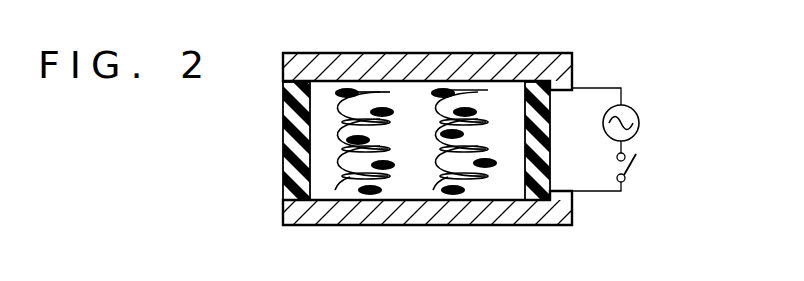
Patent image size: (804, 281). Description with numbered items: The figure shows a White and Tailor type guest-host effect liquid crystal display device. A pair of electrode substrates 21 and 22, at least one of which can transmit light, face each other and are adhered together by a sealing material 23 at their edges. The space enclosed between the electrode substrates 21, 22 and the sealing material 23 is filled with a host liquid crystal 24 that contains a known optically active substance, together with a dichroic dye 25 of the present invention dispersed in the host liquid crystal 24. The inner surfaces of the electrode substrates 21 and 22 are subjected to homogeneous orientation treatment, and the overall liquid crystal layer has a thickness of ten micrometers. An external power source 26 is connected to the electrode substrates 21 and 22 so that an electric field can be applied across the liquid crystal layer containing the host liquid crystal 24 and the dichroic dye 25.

The electrode substrate 21 is at (535, 53).
The electrode substrate 22 is at (502, 217).
The sealing material 23 is at (283, 134).
The host liquid crystal 24 is at (486, 90).
The dichroic dye 25 is at (443, 92).
The external power source 26 is at (640, 121).